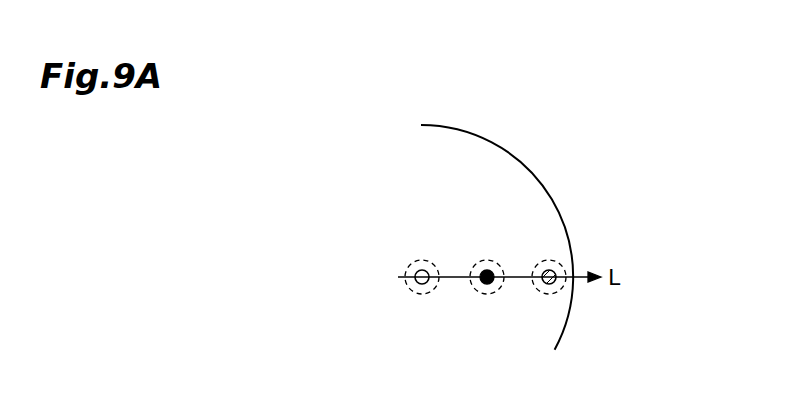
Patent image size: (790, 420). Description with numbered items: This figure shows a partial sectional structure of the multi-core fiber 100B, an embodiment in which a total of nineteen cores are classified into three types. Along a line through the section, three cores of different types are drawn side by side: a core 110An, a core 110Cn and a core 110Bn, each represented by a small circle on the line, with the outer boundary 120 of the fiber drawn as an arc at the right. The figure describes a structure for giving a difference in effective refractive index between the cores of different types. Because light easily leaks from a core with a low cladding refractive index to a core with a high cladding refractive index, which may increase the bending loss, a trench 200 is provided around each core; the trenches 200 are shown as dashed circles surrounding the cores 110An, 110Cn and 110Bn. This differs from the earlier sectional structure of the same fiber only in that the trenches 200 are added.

The multi-core fiber 100B is at (523, 224).
The lens surface (arc) 120 is at (493, 157).
The core 110An is at (414, 268).
The core 110Cn is at (489, 268).
The core 110Bn is at (553, 266).
The trench 200 is at (420, 294).